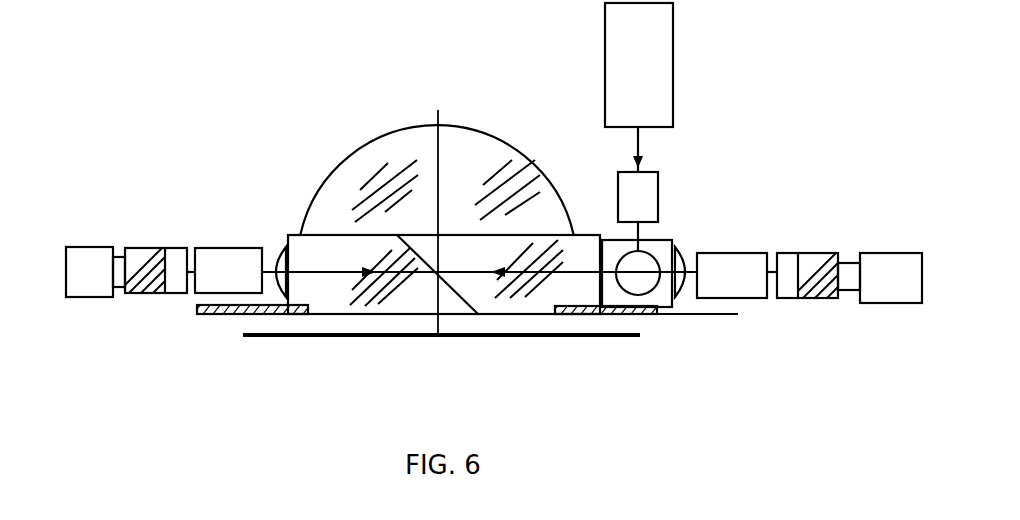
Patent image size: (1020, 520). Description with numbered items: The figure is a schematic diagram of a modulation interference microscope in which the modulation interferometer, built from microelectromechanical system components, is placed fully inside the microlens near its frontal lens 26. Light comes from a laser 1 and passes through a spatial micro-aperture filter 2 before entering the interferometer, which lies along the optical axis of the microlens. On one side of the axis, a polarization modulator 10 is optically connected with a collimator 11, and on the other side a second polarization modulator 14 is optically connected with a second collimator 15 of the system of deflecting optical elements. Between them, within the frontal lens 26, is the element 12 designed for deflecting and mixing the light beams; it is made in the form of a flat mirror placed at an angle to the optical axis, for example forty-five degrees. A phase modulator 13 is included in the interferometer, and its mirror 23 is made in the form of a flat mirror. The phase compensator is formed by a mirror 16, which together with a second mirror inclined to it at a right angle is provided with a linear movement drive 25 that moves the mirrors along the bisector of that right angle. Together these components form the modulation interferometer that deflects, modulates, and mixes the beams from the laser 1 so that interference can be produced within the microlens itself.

The laser 1 is at (625, 70).
The spatial micro-aperture filter 2 is at (632, 190).
The polarization modulator 10 is at (207, 263).
The collimator 11 is at (282, 260).
The element designed for deflecting and mixing the light beams 12 is at (430, 277).
The phase modulator 13 is at (912, 267).
The second polarization modulator 14 is at (735, 267).
The second collimator 15 is at (685, 252).
The mirror 16 is at (177, 260).
The mirror of the phase modulator 23 is at (808, 257).
The linear movement drive 25 is at (80, 278).
The frontal lens 26 is at (393, 153).